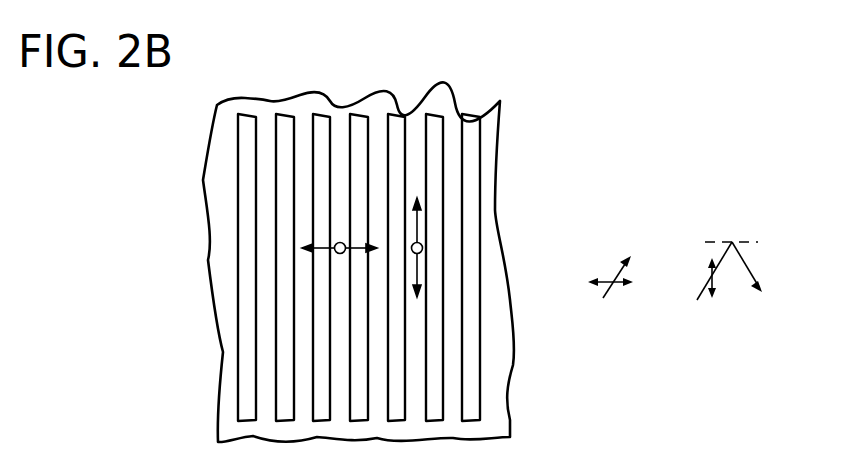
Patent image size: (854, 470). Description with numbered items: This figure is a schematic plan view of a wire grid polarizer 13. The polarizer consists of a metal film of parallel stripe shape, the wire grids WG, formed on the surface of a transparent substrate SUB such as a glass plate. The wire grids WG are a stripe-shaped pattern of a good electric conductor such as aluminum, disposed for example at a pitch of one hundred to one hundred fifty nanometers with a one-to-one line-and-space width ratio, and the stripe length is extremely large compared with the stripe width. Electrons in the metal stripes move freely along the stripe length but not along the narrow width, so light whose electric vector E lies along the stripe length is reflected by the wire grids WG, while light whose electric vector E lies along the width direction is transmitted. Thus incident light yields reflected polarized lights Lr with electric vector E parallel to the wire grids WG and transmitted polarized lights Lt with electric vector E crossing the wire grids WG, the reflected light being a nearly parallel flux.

The wire grid polarizer 13 is at (294, 93).
The wire grids WG is at (480, 131).
The transparent substrate SUB is at (500, 170).
The transmitted polarized lights Lt is at (627, 262).
The reflected polarized lights Lr is at (746, 278).
The electric vector E is at (660, 279).